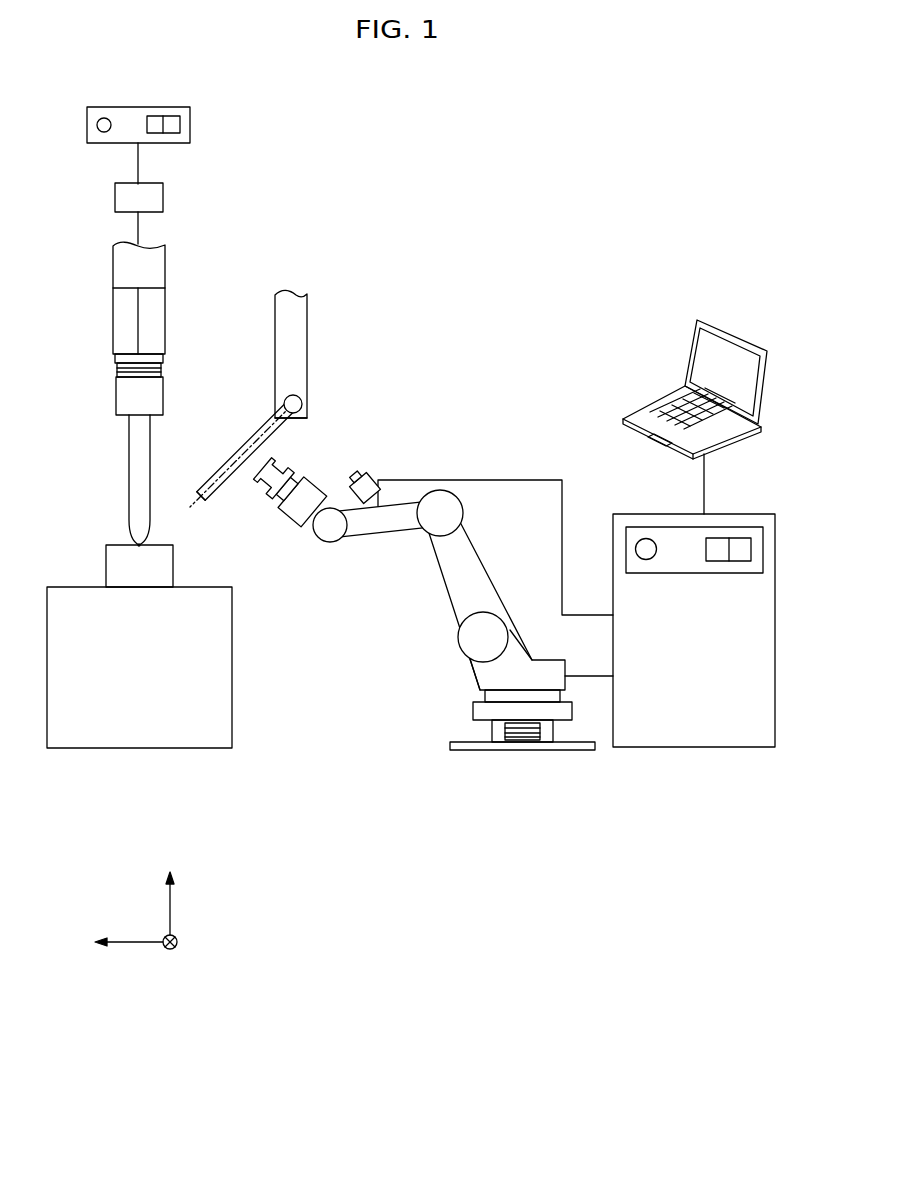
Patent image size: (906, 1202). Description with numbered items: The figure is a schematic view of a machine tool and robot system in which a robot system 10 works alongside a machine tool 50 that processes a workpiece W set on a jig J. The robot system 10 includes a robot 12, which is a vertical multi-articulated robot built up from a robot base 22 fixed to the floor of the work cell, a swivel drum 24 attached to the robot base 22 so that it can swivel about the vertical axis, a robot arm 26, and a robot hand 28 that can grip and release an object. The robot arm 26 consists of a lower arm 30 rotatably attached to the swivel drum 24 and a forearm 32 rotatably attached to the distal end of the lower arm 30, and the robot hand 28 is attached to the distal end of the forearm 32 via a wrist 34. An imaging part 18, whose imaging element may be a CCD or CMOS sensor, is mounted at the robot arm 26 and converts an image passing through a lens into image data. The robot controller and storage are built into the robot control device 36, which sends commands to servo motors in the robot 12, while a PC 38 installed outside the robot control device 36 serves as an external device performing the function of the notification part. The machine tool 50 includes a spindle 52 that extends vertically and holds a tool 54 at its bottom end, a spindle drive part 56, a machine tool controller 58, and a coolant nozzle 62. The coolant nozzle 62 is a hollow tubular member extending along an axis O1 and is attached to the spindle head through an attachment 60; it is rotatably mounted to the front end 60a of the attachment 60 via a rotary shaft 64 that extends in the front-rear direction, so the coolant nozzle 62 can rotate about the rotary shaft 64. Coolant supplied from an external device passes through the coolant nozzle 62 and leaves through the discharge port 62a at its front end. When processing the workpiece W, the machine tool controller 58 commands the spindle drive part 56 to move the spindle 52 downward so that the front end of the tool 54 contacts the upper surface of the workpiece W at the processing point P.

The robot system 10 is at (492, 295).
The robot 12 is at (450, 455).
The imaging part 18 is at (364, 476).
The robot base 22 is at (497, 729).
The swivel drum 24 is at (485, 679).
The robot arm 26 is at (436, 632).
The robot hand 28 is at (258, 496).
The lower arm 30 is at (460, 573).
The forearm 32 is at (367, 523).
The wrist 34 is at (328, 535).
The robot control device 36 is at (621, 512).
The PC 38 is at (733, 334).
The machine tool 50 is at (232, 164).
The spindle 52 is at (122, 323).
The tool 54 is at (138, 447).
The spindle drive part 56 is at (122, 200).
The machine tool controller 58 is at (108, 106).
The attachment 60 is at (300, 319).
The front end of the attachment 60a is at (302, 421).
The coolant nozzle 62 is at (263, 432).
The discharge port 62a is at (197, 492).
The rotary shaft 64 is at (287, 405).
The axis O1 is at (236, 461).
The workpiece W is at (122, 568).
The processing point P is at (148, 556).
The jig J is at (118, 730).